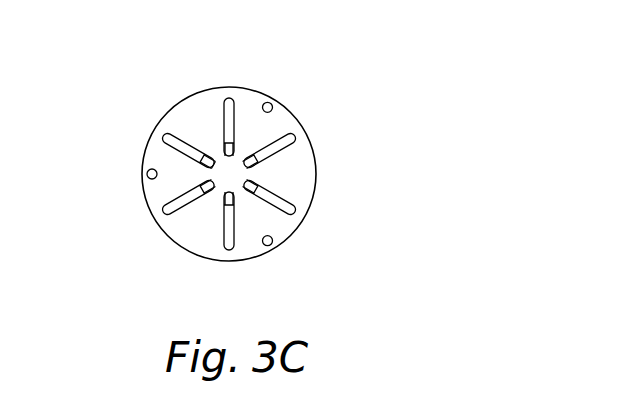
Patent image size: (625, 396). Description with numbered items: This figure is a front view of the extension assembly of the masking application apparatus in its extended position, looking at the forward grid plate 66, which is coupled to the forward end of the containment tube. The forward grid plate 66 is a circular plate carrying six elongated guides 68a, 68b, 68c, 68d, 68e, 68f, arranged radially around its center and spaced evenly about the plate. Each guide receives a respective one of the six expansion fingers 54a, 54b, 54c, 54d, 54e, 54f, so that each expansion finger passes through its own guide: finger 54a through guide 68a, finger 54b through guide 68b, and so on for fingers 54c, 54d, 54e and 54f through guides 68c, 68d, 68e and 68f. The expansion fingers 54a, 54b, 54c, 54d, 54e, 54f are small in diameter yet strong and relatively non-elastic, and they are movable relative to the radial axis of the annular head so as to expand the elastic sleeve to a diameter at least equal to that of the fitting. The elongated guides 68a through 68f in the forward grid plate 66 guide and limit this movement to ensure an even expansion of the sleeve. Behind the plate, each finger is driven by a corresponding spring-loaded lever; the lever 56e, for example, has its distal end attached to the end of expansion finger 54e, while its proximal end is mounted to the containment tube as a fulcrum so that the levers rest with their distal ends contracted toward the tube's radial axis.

The forward grid plate 66 is at (210, 88).
The elongated guide 68a is at (295, 137).
The elongated guide 68b is at (295, 207).
The elongated guide 68c is at (237, 248).
The elongated guide 68d is at (165, 216).
The elongated guide 68e is at (163, 136).
The elongated guide 68f is at (234, 98).
The expansion finger 54a is at (250, 169).
The expansion finger 54b is at (245, 195).
The expansion finger 54c is at (225, 197).
The expansion finger 54d is at (205, 183).
The expansion finger 54e is at (203, 159).
The expansion finger 54f is at (236, 148).
The lever 56e is at (213, 152).